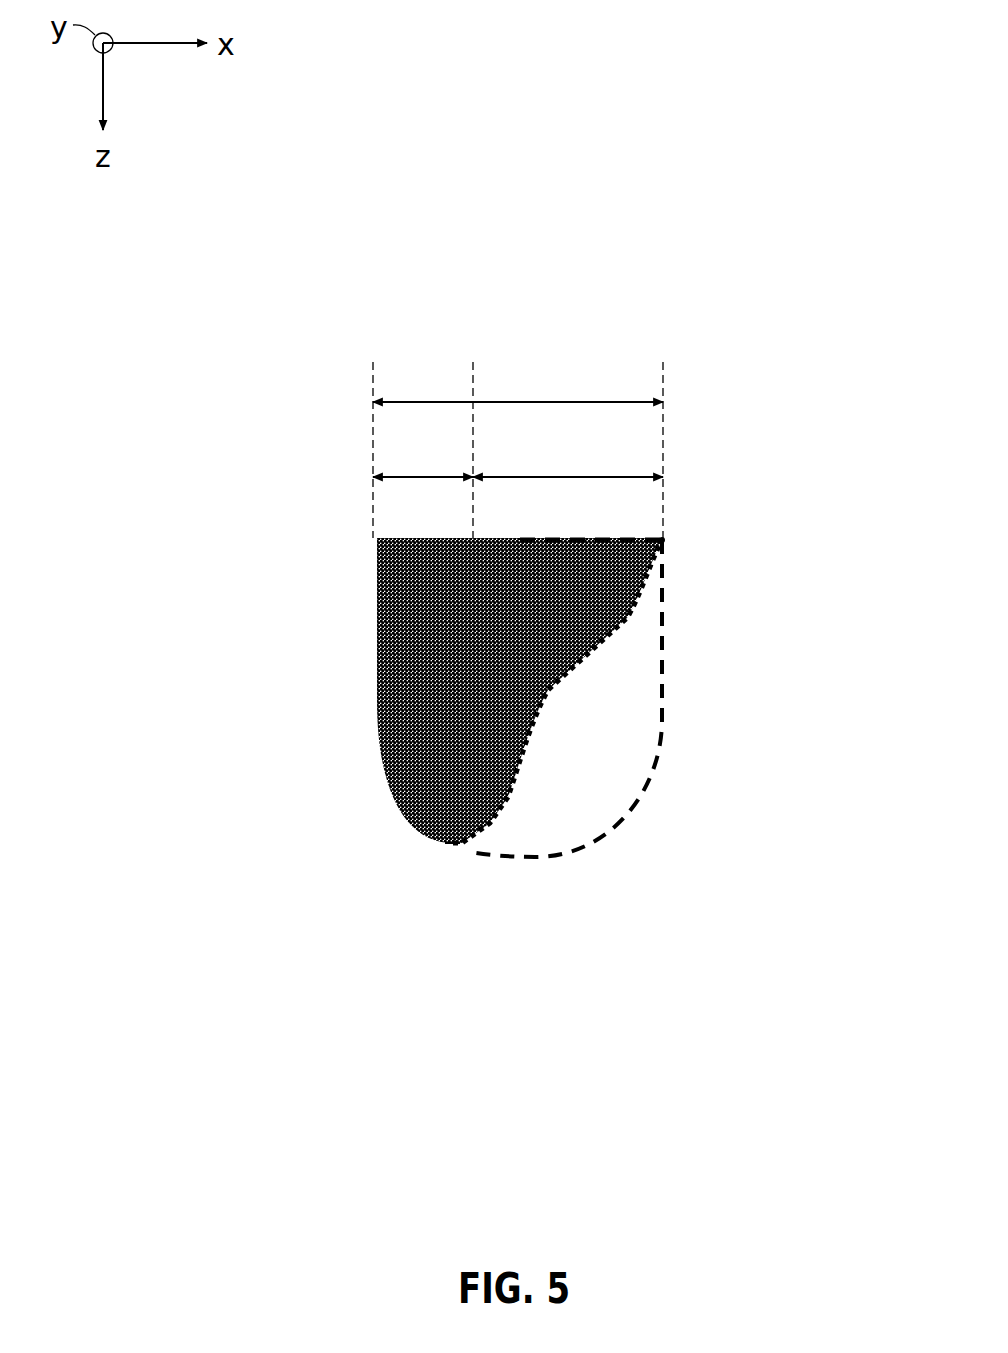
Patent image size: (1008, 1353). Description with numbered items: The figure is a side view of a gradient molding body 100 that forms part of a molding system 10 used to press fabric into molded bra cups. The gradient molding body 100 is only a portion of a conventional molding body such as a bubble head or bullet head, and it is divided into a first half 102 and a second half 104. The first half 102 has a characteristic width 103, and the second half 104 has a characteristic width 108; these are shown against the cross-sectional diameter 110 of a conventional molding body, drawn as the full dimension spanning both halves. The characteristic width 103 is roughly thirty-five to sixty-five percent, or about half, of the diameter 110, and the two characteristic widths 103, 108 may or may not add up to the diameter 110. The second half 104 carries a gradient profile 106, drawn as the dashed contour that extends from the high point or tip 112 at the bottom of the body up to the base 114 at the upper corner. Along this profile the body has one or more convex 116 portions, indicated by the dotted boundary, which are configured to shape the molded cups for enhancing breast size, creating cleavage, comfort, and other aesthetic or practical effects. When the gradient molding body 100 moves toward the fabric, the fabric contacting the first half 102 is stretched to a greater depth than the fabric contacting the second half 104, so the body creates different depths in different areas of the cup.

The molding system 10 is at (447, 173).
The gradient molding body 100 is at (303, 303).
The first half 102 is at (423, 672).
The characteristic width 103 is at (405, 477).
The second half 104 is at (605, 570).
The gradient profile 106 is at (497, 825).
The characteristic width 108 is at (593, 477).
The cross-sectional diameter 110 is at (548, 402).
The tip 112 is at (453, 849).
The base 114 is at (672, 543).
The convex 116 is at (508, 797).